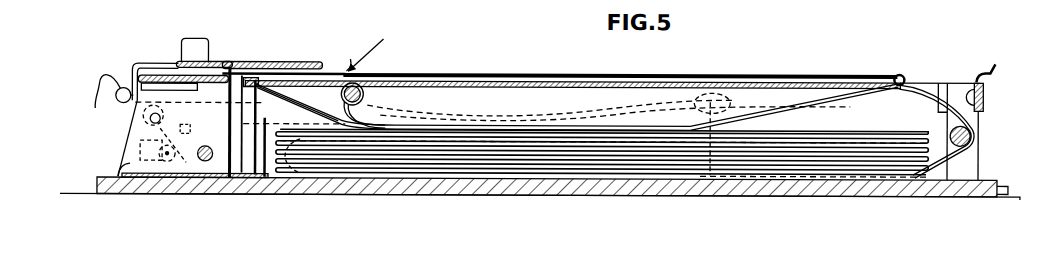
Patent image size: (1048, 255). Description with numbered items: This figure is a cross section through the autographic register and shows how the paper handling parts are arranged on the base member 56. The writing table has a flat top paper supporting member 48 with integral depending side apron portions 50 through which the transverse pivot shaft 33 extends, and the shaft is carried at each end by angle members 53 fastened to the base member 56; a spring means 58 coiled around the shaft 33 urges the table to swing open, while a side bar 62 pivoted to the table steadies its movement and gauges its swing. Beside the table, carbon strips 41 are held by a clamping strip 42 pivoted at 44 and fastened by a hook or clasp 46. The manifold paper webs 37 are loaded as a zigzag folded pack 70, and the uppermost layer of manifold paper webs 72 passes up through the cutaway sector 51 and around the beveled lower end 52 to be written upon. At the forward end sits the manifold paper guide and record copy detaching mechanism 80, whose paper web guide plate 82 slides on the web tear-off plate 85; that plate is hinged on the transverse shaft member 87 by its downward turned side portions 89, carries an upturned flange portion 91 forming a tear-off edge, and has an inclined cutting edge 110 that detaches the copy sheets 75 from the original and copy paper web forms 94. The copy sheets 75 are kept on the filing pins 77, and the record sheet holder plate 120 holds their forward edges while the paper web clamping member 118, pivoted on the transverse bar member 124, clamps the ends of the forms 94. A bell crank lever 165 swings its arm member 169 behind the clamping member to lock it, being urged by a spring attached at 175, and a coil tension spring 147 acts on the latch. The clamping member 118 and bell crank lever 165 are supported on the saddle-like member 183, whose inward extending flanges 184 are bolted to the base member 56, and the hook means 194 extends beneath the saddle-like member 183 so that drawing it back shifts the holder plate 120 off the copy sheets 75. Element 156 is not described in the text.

The transverse pivot shaft 33 is at (973, 133).
The manifold paper webs 37 is at (527, 58).
The carbon strips 41 is at (505, 0).
The clamping strip 42 is at (579, 0).
The clamping strip pivot 44 is at (900, 0).
The hook or clasp 46 is at (400, 0).
The paper supporting member 48 is at (561, 91).
The side apron portions 50 is at (502, 96).
The cutaway sector 51 is at (902, 90).
The beveled lower end 52 is at (904, 76).
The angle members 53 is at (978, 160).
The base member 56 is at (1004, 183).
The spring means 58 is at (945, 105).
The side bar 62 is at (725, 100).
The zigzag folded pack 70 is at (890, 134).
The uppermost layer of manifold paper webs 72 is at (847, 112).
The copy sheets 75 is at (345, 93).
The filing pins 77 is at (256, 88).
The manifold paper guide and record copy detaching mechanism 80 is at (357, 54).
The paper web guide plate 82 is at (320, 62).
The web tear-off plate 85 is at (272, 68).
The transverse shaft member 87 is at (366, 96).
The downward turned side portions 89 is at (345, 66).
The upturned flange portion 91 is at (258, 62).
The original and copy paper web forms 94 is at (381, 49).
The inclined cutting edge 110 is at (262, 68).
The paper web clamping member 118 is at (183, 60).
The record sheet holder plate 120 is at (176, 118).
The transverse bar member 124 is at (208, 161).
The coil tension spring 147 is at (155, 113).
The button housing 156 is at (200, 22).
The bell crank lever 165 is at (147, 150).
The arm member 169 is at (184, 144).
The spring attachment point 175 is at (163, 180).
The saddle-like member 183 is at (137, 129).
The inward extending flanges 184 is at (124, 163).
The hook means 194 is at (104, 78).